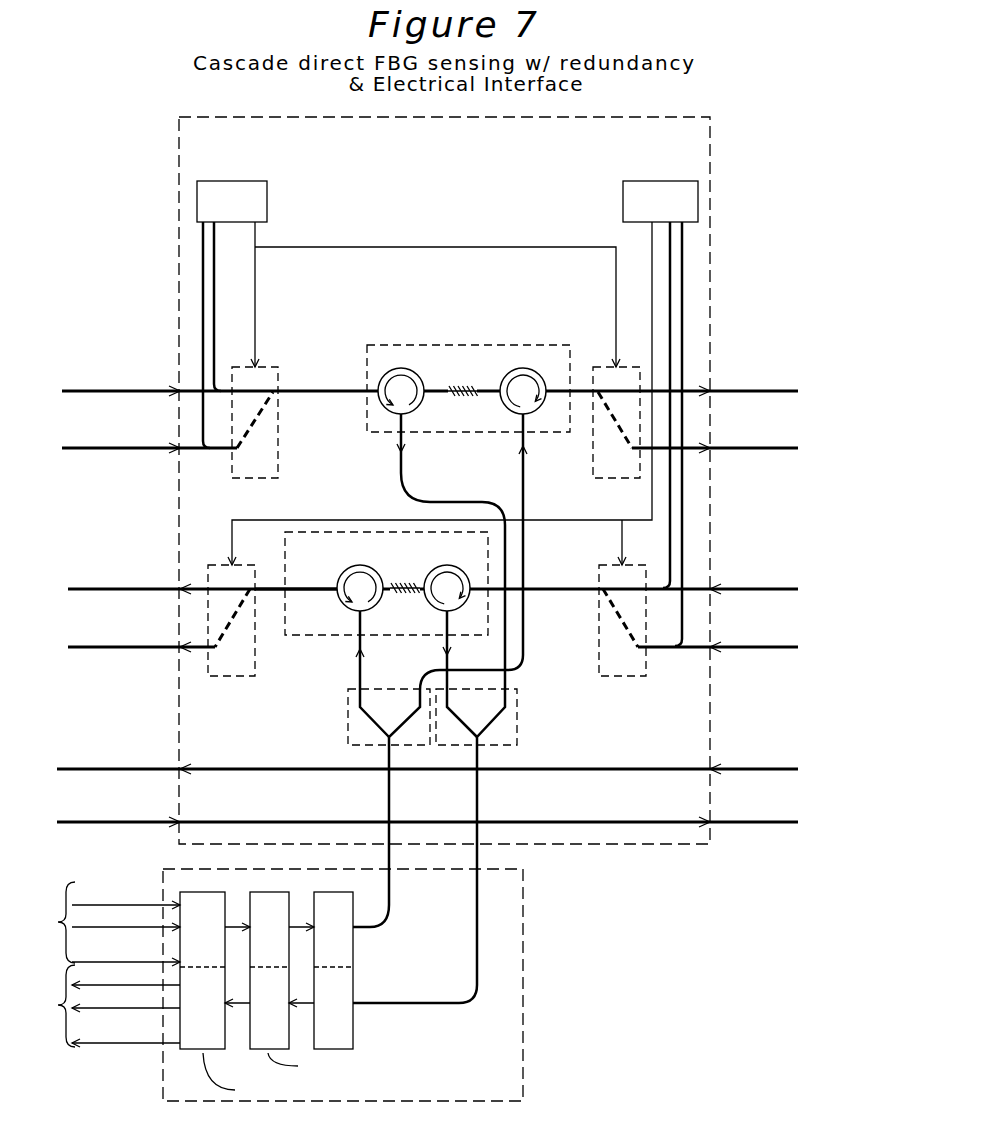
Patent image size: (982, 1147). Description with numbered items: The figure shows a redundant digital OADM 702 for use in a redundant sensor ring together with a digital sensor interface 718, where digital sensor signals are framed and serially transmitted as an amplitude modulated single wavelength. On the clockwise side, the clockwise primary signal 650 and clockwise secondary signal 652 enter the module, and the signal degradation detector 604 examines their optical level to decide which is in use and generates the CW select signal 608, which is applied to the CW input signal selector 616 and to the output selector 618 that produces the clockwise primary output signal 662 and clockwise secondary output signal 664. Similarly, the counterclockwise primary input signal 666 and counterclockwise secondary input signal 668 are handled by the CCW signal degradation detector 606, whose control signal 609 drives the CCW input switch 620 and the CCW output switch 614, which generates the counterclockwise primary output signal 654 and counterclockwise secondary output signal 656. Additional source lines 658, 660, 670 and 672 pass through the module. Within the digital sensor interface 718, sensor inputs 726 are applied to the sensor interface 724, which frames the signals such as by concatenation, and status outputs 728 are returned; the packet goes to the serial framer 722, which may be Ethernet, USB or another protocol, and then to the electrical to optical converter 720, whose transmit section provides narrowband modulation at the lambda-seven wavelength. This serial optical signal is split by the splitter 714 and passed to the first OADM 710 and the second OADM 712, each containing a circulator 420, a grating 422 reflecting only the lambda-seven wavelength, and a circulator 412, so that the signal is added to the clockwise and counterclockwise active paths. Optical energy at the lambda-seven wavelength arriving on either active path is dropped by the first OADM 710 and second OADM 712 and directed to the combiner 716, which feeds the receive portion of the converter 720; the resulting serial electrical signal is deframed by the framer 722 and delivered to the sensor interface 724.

The redundant digital OADM 702 is at (429, 468).
The signal degradation detector 604 is at (297, 291).
The CCW signal degradation detector 606 is at (588, 390).
The CW select signal 608 is at (435, 294).
The control signal 609 is at (440, 393).
The CCW output switch 614 is at (231, 633).
The CW input signal selector 616 is at (253, 435).
The selector 618 is at (616, 435).
The CCW input switch 620 is at (622, 633).
The clockwise primary signal 650 is at (219, 358).
The clockwise secondary signal 652 is at (146, 441).
The counterclockwise primary output signal 654 is at (192, 562).
The counterclockwise secondary output signal 656 is at (131, 639).
The CCW source output 658 is at (241, 750).
The CW source input 660 is at (248, 818).
The clockwise primary output signal 662 is at (681, 361).
The clockwise secondary output signal 664 is at (724, 443).
The counterclockwise primary input signal 666 is at (643, 558).
The counterclockwise secondary input signal 668 is at (727, 641).
The CCW source input 670 is at (628, 769).
The CW source output 672 is at (628, 825).
The first OADM 710 is at (468, 376).
The second OADM 712 is at (371, 595).
The splitter 714 is at (367, 719).
The combiner 716 is at (500, 719).
The digital sensor interface 718 is at (365, 985).
The electrical to optical converter 720 is at (321, 960).
The serial framer 722 is at (361, 973).
The sensor interface 724 is at (261, 985).
The sensor input lines 726 is at (107, 924).
The status output lines 728 is at (107, 1006).
The circulator 420 is at (374, 480).
The circulator 412 is at (485, 480).
The grating 422 is at (433, 476).